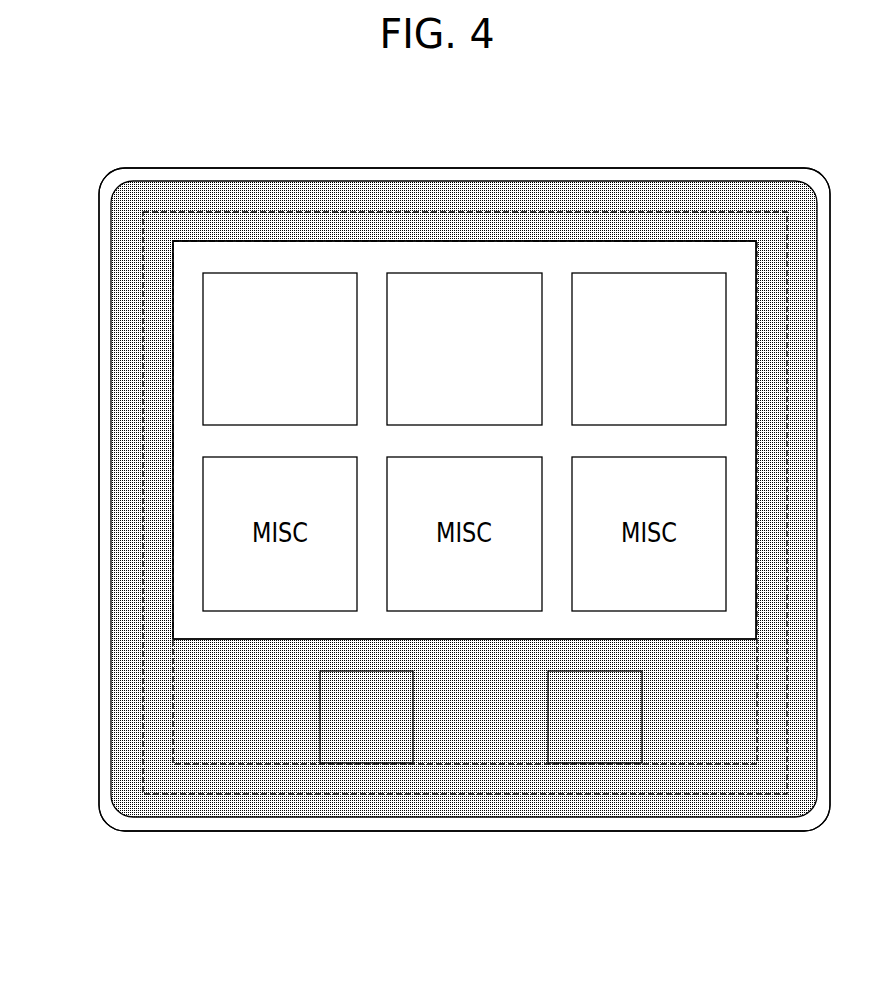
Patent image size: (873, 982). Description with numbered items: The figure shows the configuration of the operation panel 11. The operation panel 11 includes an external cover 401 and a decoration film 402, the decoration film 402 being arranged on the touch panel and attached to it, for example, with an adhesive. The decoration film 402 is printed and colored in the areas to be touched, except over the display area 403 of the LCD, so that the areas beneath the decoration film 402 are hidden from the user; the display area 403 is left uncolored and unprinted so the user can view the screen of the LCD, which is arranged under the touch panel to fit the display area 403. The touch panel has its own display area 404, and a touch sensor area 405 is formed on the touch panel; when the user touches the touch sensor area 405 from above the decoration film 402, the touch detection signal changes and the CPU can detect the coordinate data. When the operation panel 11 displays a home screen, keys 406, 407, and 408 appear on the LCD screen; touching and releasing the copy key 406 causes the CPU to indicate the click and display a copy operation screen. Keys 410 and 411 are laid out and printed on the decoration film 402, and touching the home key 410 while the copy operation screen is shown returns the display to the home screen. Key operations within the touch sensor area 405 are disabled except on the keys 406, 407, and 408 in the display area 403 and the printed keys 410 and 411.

The operation panel 11 is at (243, 168).
The external cover 401 is at (99, 292).
The decoration film 402 is at (120, 380).
The display area 403 is at (195, 443).
The display area 404 is at (143, 540).
The touch sensor area 405 is at (172, 706).
The copy key 406 is at (288, 273).
The key 407 is at (470, 273).
The key 408 is at (656, 273).
The home key 410 is at (320, 716).
The key 411 is at (642, 712).